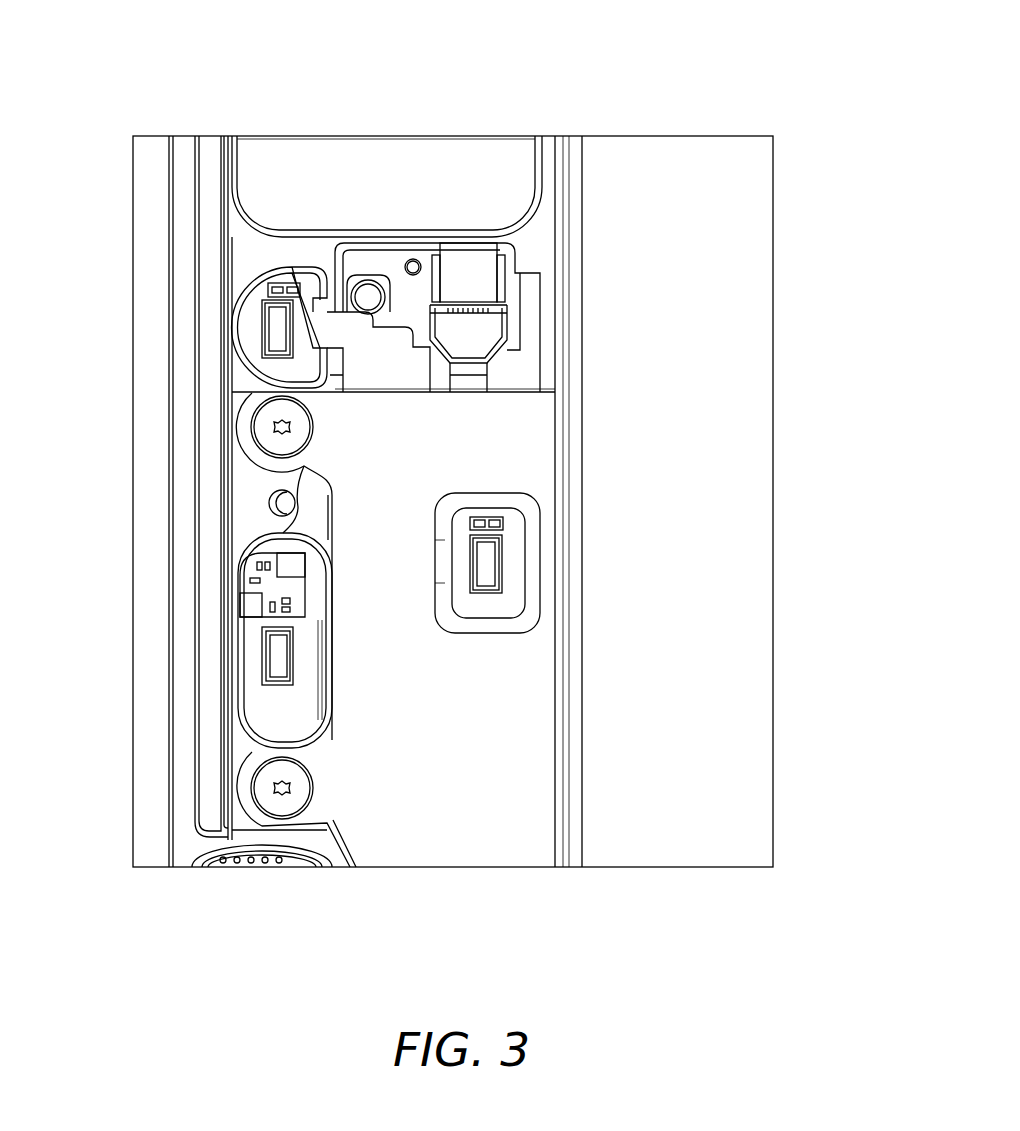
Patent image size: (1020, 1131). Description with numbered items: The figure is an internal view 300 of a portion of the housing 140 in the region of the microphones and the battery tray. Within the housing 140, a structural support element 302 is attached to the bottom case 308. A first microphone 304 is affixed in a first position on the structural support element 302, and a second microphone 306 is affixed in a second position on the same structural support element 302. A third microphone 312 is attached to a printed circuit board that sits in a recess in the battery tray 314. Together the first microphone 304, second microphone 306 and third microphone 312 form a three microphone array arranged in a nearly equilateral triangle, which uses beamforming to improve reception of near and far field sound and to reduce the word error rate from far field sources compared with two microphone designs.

The internal view 300 is at (233, 78).
The housing 140 is at (653, 167).
The structural support element 302 is at (250, 248).
The first microphone 304 is at (263, 328).
The second microphone 306 is at (250, 655).
The bottom case 308 is at (235, 502).
The third microphone 312 is at (487, 592).
The battery tray 314 is at (555, 667).